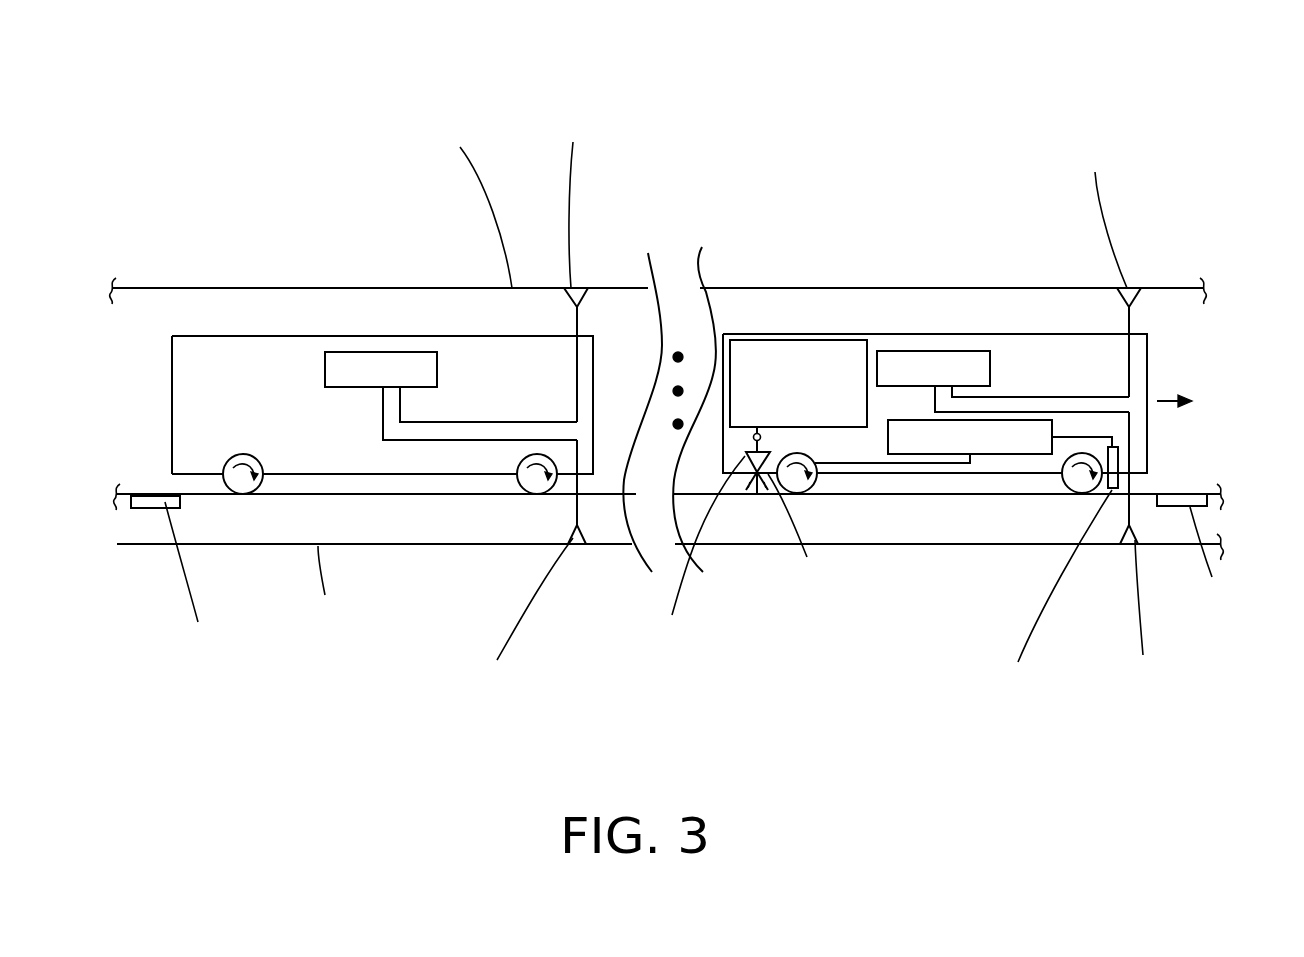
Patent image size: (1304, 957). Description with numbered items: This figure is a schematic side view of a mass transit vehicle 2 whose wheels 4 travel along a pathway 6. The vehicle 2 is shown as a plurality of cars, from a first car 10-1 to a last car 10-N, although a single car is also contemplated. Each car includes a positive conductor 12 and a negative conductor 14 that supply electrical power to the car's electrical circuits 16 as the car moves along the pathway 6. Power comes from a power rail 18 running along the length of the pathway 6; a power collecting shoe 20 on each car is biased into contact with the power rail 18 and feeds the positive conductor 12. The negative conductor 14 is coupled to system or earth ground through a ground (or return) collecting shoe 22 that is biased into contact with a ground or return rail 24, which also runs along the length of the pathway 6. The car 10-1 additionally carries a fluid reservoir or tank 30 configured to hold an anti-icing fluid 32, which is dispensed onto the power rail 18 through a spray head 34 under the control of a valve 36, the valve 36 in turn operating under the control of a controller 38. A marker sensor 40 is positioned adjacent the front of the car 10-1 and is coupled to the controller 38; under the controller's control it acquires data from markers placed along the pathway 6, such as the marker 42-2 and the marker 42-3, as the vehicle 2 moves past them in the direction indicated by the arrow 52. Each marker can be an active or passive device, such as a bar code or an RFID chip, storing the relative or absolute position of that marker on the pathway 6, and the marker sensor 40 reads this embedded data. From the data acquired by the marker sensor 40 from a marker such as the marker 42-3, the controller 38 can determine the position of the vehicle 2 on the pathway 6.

The vehicle 2 is at (1083, 82).
The wheels 4 is at (237, 484).
The pathway 6 is at (200, 494).
The car 10-N is at (386, 336).
The car 10-1 is at (940, 335).
The positive conductor 12 is at (380, 424).
The negative conductor 14 is at (470, 422).
The electrical circuits 16 is at (440, 366).
The power rail 18 is at (410, 546).
The power collecting shoe 20 is at (580, 540).
The ground (or return) collecting shoe 22 is at (578, 290).
The ground or return rail 24 is at (272, 288).
The fluid reservoir or tank 30 is at (845, 340).
The anti-icing fluid 32 is at (764, 480).
The spray head 34 is at (751, 466).
The valve 36 is at (753, 438).
The controller 38 is at (1020, 455).
The marker sensor 40 is at (1107, 478).
The marker 42-2 is at (146, 502).
The marker 42-3 is at (1170, 507).
The arrow 52 is at (1163, 397).